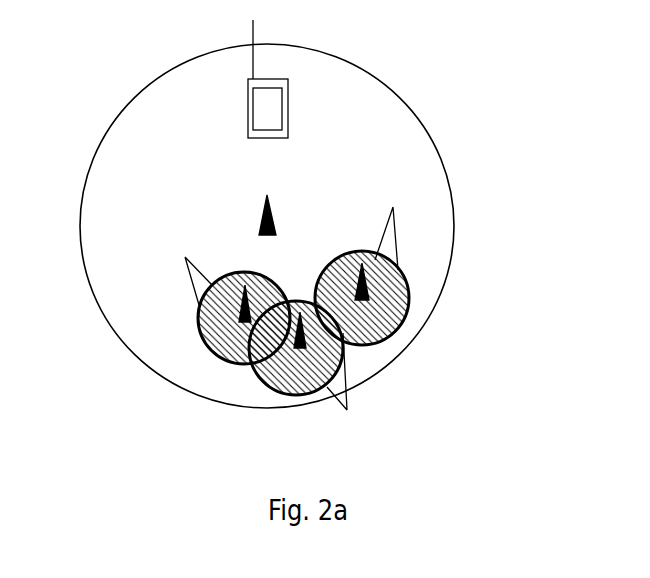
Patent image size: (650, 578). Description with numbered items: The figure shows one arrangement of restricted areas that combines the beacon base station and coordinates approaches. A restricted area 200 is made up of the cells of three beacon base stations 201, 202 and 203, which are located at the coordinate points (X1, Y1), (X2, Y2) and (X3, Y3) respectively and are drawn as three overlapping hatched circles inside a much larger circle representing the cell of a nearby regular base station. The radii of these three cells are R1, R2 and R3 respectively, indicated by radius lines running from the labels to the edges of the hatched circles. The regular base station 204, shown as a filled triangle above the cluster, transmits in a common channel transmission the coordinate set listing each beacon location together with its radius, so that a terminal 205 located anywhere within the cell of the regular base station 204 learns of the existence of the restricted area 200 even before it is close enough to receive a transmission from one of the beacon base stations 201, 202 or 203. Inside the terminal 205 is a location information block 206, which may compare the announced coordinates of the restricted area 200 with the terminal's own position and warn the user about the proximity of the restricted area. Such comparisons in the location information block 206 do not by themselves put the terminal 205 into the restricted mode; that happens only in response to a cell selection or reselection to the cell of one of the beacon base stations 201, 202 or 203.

The restricted area 200 is at (381, 372).
The beacon base station 201 is at (208, 352).
The beacon base station 202 is at (284, 392).
The beacon base station 203 is at (399, 326).
The regular base station 204 is at (260, 232).
The terminal 205 is at (248, 127).
The location information block 206 is at (285, 115).
The radius of the cell of the first beacon base station R1 is at (191, 268).
The radius of the cell of the second beacon base station R2 is at (350, 383).
The radius of the cell of the third beacon base station R3 is at (390, 227).